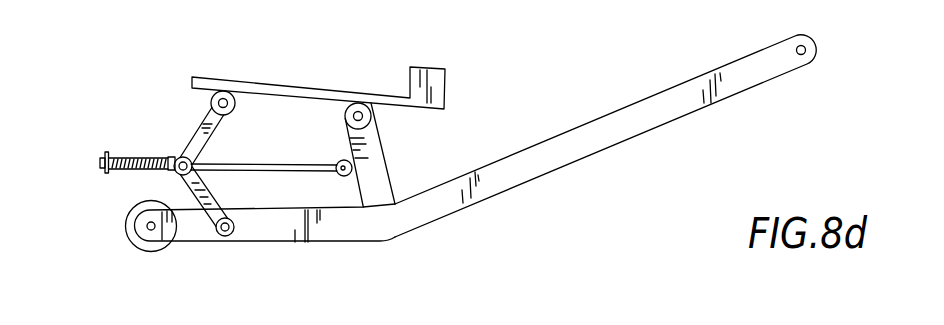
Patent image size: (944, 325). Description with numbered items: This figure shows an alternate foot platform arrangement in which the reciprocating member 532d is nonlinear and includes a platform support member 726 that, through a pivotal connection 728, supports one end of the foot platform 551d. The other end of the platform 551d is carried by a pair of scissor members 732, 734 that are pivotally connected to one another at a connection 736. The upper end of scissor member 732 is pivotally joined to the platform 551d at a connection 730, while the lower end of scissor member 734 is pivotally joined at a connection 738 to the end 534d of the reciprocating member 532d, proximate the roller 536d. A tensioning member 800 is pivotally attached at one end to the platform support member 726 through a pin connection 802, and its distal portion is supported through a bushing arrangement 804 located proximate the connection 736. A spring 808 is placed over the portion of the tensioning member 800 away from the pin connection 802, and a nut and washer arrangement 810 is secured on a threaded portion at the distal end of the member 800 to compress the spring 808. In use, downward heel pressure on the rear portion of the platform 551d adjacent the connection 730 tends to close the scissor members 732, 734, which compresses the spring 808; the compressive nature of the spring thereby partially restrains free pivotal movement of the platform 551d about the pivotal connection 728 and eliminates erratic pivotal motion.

The end of reciprocating member 534d is at (173, 241).
The reciprocating member 532d is at (668, 98).
The roller 536d is at (133, 245).
The platform 551d is at (297, 84).
The connection 730 is at (223, 91).
The scissor member 732 is at (193, 130).
The connection 736 is at (180, 157).
The scissor member 734 is at (203, 207).
The connection 738 is at (233, 231).
The tensioning member 800 is at (272, 163).
The pin connection 802 is at (345, 178).
The pivotal connection 728 is at (358, 103).
The platform support member 726 is at (386, 165).
The spring 808 is at (130, 173).
The bushing arrangement 804 is at (160, 157).
The nut and washer arrangement 810 is at (103, 158).